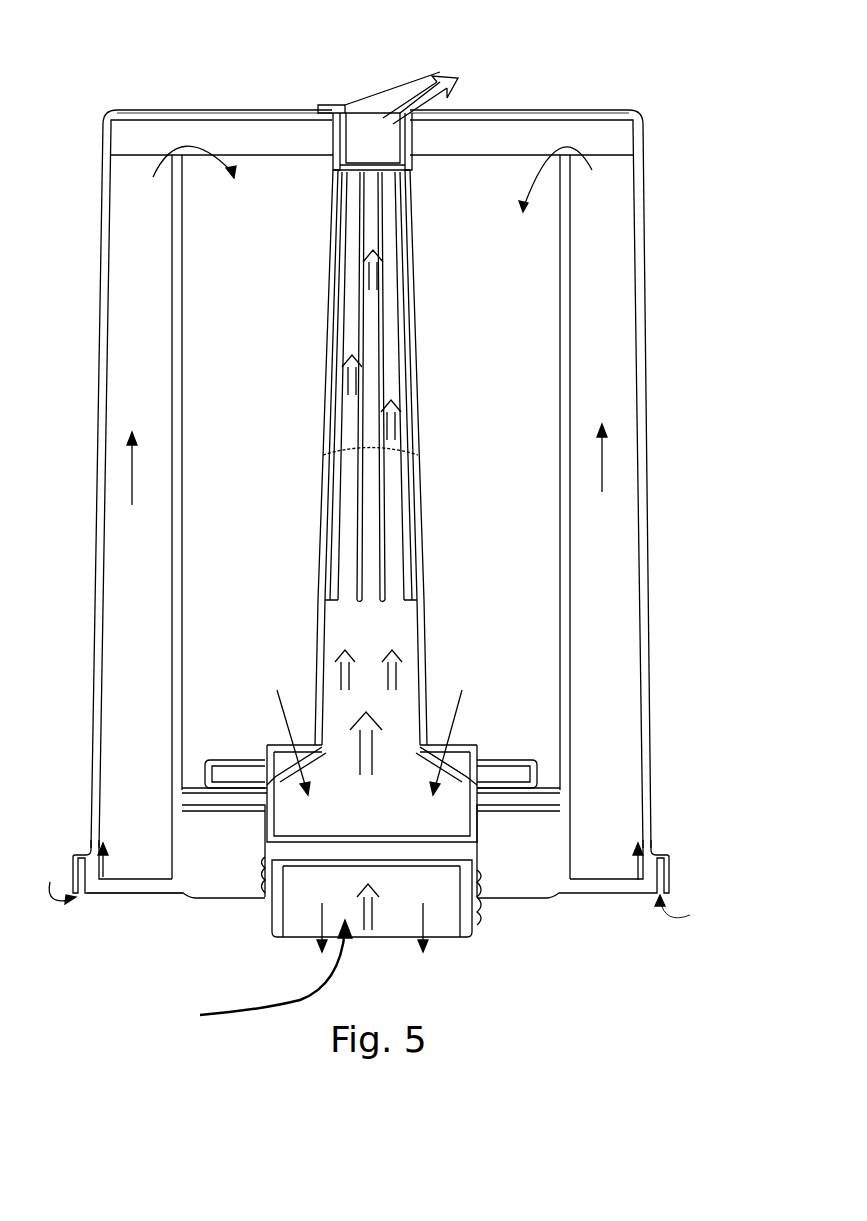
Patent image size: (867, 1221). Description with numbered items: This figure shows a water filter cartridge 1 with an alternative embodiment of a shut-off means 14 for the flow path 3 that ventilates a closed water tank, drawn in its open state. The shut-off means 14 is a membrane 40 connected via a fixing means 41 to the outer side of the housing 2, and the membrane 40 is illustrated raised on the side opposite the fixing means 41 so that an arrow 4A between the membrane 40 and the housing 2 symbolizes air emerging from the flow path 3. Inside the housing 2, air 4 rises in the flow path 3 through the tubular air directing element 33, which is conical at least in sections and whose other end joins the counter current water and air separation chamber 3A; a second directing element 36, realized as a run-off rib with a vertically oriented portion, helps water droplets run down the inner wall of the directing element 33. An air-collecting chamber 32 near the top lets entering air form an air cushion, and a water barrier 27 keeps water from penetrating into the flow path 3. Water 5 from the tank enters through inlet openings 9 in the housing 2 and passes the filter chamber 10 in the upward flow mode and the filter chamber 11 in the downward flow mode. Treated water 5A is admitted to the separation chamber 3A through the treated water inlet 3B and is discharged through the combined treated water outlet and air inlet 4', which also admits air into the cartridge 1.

The water filter cartridge 1 is at (150, 108).
The housing 2 is at (523, 112).
The flow path 3 is at (370, 590).
The counter current water and air separation chamber 3A is at (331, 803).
The treated water inlet 3B is at (445, 755).
The air 4 is at (374, 680).
The combined water outlet and air inlet 4' is at (256, 975).
The arrow 4A is at (418, 100).
The water 5 is at (158, 156).
The treated water 5A is at (282, 692).
The inlet openings 9 is at (92, 898).
The filter chamber 10 is at (359, 504).
The filter chamber 11 is at (255, 548).
The shut-off means 14 is at (365, 100).
The water barrier 27 is at (436, 70).
The air-collecting chamber 32 is at (350, 152).
The directing element 33 is at (426, 527).
The second directing element 36 is at (338, 468).
The membrane 40 is at (397, 100).
The fixing means 41 is at (322, 106).